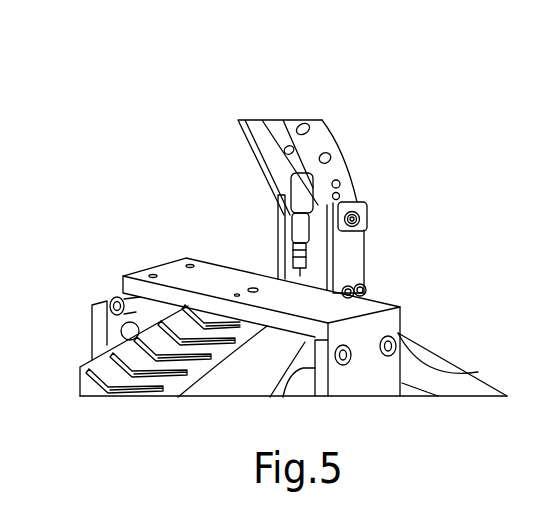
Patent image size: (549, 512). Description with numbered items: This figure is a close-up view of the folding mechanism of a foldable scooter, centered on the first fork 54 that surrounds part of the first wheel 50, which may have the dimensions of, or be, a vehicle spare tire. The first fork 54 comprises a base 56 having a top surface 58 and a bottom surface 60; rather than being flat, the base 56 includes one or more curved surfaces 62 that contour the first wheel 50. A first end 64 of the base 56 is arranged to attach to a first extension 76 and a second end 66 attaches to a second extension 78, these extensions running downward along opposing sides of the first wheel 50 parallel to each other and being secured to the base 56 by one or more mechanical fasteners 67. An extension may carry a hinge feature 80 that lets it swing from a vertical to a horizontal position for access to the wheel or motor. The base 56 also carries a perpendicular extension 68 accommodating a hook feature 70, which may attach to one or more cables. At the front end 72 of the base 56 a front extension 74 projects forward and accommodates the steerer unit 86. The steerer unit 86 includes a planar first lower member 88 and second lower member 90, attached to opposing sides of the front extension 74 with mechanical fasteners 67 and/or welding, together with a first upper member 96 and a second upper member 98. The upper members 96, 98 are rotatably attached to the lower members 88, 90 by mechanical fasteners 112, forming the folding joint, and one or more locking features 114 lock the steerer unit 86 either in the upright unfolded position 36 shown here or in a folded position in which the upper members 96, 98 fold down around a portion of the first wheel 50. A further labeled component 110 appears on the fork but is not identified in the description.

The unfolded position 36 is at (455, 70).
The first wheel 50 is at (445, 362).
The first fork 54 is at (478, 372).
The base 56 is at (203, 280).
The top surface 58 is at (224, 280).
The bottom surface 60 is at (265, 337).
The curved surfaces 62 is at (290, 348).
The first end 64 is at (339, 306).
The second end 66 is at (118, 284).
The mechanical fasteners 67 is at (165, 320).
The perpendicular extension 68 is at (302, 268).
The hook feature 70 is at (286, 172).
The front end 72 is at (250, 268).
The front extension 74 is at (306, 280).
The first extension 76 is at (367, 378).
The second extension 78 is at (100, 335).
The hinge feature 80 is at (103, 330).
The steerer unit 86 is at (360, 172).
The first lower member 88 is at (358, 210).
The second lower member 90 is at (292, 244).
The first upper member 96 is at (336, 175).
The second upper member 98 is at (268, 138).
The fastener 110 is at (363, 286).
The mechanical fasteners 112 is at (360, 229).
The locking features 114 is at (262, 156).